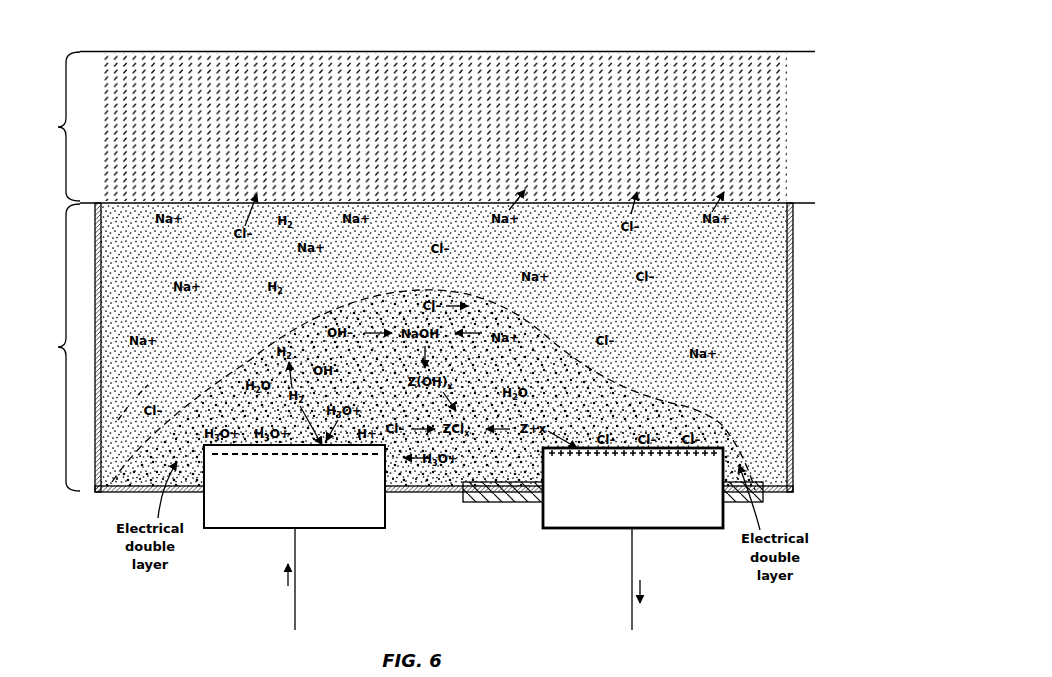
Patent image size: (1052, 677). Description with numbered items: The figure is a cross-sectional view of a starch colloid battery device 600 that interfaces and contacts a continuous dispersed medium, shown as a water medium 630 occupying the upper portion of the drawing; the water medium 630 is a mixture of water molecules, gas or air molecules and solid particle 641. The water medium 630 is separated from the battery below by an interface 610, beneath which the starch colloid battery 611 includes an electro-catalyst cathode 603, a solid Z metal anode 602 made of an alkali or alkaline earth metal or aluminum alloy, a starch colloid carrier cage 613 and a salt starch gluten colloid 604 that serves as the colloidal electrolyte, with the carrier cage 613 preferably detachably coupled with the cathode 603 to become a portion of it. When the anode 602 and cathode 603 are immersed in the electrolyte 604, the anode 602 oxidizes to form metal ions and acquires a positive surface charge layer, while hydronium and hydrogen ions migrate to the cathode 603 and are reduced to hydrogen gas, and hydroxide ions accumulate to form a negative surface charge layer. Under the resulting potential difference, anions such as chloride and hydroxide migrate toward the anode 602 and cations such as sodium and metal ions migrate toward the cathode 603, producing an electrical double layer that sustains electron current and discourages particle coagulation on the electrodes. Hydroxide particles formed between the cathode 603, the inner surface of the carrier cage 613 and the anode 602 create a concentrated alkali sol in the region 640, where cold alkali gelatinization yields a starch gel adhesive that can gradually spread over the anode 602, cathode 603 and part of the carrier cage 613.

The starch colloid battery device 600 is at (84, 43).
The water medium 630 is at (55, 126).
The solid particle 641 is at (758, 131).
The membrane / separator line 610 is at (773, 202).
The salt starch gluten colloid 604 is at (755, 275).
The starch colloid carrier cage 613 is at (790, 326).
The starch colloid battery 611 is at (55, 347).
The region of gelatinized starch gel adhesive 640 is at (708, 422).
The electro-catalyst cathode 603 is at (247, 519).
The solid Z metal anode 602 is at (683, 529).